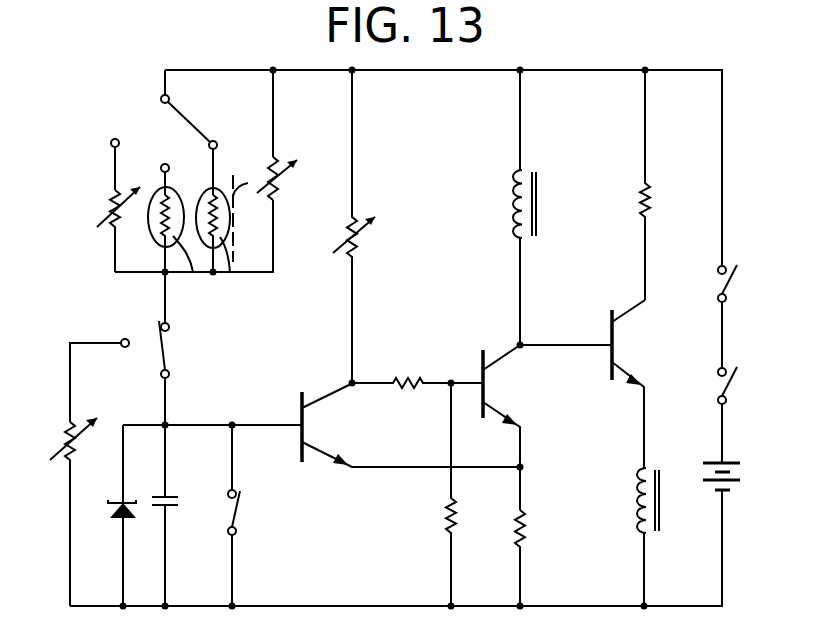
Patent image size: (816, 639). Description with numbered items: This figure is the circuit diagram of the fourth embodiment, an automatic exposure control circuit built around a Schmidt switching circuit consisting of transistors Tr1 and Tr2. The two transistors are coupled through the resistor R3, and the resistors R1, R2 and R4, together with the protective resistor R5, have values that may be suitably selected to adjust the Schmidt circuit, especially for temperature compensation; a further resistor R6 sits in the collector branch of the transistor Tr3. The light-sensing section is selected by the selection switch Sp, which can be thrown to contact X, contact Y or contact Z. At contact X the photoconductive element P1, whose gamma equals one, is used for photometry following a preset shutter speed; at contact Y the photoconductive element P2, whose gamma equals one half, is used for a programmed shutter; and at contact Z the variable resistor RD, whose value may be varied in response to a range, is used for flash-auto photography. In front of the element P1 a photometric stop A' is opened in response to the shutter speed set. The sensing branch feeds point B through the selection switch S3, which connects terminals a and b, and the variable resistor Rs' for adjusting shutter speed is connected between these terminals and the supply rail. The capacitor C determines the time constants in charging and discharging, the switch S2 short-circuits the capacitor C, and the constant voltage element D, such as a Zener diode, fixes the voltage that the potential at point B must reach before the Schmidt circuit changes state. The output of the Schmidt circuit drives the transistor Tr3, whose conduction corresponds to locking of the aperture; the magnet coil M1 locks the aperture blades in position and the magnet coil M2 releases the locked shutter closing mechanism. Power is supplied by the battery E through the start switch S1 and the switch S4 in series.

The selection switch Sp is at (191, 118).
The contact X is at (224, 160).
The contact Y is at (174, 175).
The contact Z is at (125, 159).
The variable resistor RD is at (106, 228).
The protective resistor R5 is at (287, 183).
The photoconductive element P1 is at (224, 248).
The photoconductive element P2 is at (176, 247).
The contact A' is at (248, 206).
The terminal a is at (174, 319).
The terminal b is at (99, 366).
The selection switch S3 is at (181, 373).
The point B is at (212, 439).
The variable resistor Rs' is at (62, 512).
The constant voltage element D is at (128, 515).
The capacitor C is at (177, 515).
The switch S2 is at (252, 514).
The transistor Tr1 is at (395, 410).
The resistor R3 is at (418, 365).
The resistor R4 is at (364, 228).
The resistor R2 is at (470, 494).
The transistor Tr2 is at (491, 412).
The resistor R1 is at (540, 558).
The magnet coil M2 is at (562, 209).
The resistor R6 is at (664, 185).
The transistor Tr3 is at (614, 371).
The magnet coil M1 is at (670, 537).
The start switch S1 is at (743, 316).
The switch S4 is at (742, 415).
The battery E is at (730, 481).